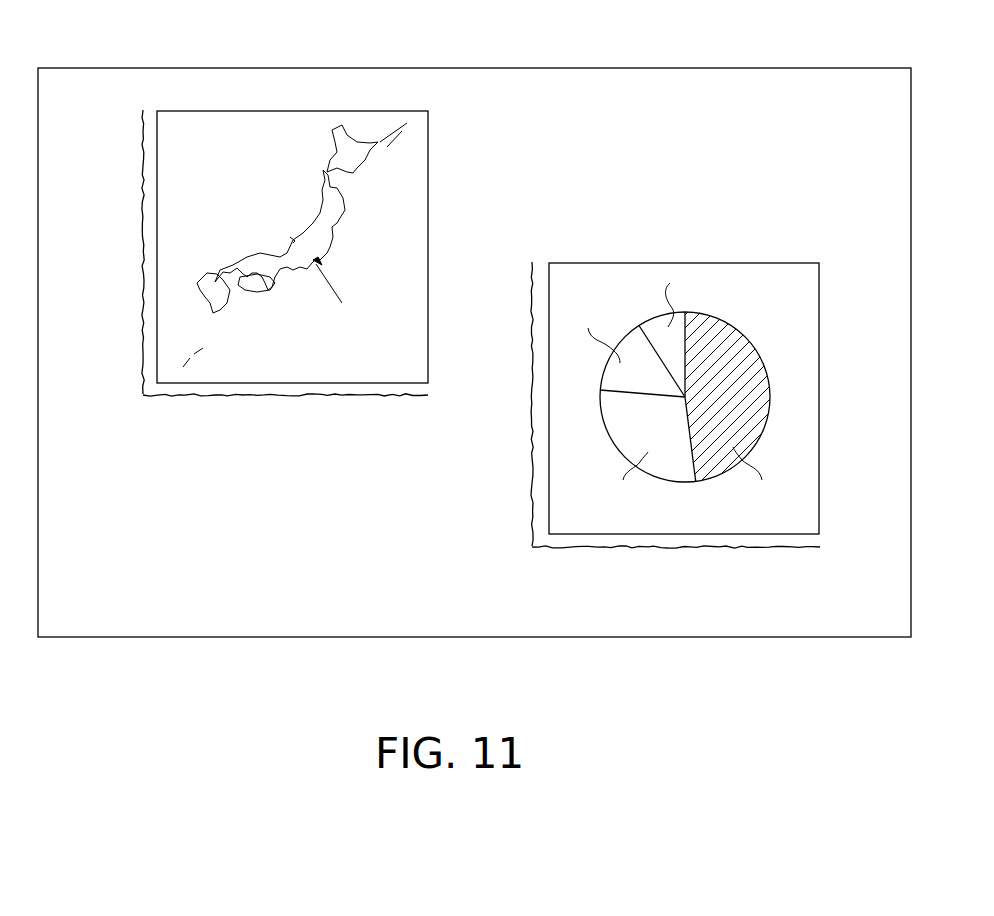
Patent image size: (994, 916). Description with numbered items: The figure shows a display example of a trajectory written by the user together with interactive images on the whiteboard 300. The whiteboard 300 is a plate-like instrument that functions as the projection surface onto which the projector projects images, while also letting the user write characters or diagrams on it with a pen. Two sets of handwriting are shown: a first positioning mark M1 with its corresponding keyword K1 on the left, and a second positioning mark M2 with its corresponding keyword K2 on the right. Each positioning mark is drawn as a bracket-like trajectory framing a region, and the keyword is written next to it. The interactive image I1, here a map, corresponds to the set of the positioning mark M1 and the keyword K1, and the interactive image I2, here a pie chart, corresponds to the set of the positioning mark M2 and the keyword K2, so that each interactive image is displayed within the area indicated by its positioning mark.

The whiteboard 300 is at (647, 68).
The interactive image I1 is at (428, 150).
The positioning mark M1 is at (142, 173).
The keyword K1 is at (242, 456).
The interactive image I2 is at (727, 262).
The positioning mark M2 is at (532, 300).
The keyword K2 is at (595, 586).